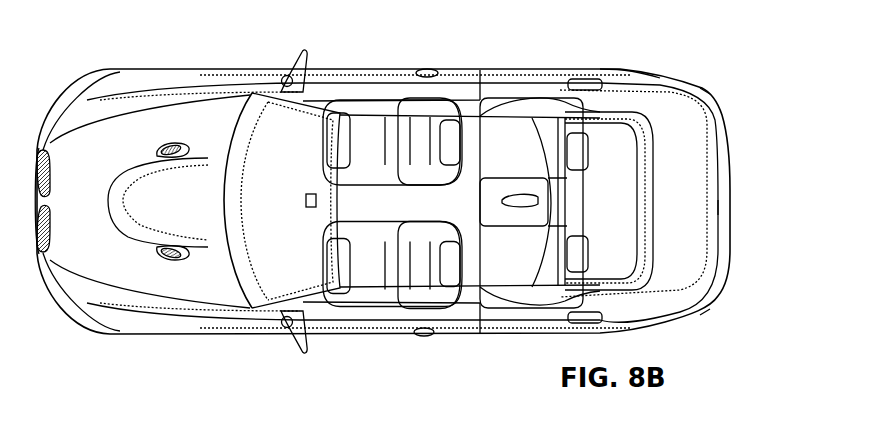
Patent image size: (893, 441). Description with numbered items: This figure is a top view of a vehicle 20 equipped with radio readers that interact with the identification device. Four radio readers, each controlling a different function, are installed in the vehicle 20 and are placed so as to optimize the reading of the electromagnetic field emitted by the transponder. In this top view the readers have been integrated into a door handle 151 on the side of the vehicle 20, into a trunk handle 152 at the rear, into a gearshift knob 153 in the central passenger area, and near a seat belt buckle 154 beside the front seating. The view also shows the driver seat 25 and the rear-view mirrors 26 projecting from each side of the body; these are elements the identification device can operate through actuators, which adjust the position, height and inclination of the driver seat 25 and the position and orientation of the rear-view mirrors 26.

The vehicle 20 is at (631, 63).
The driver seat 25 is at (368, 255).
The rear-view mirrors 26 is at (293, 62).
The door handle 151 is at (437, 336).
The trunk handle 152 is at (725, 197).
The gearshift knob 153 is at (311, 194).
The seat belt buckle 154 is at (402, 226).